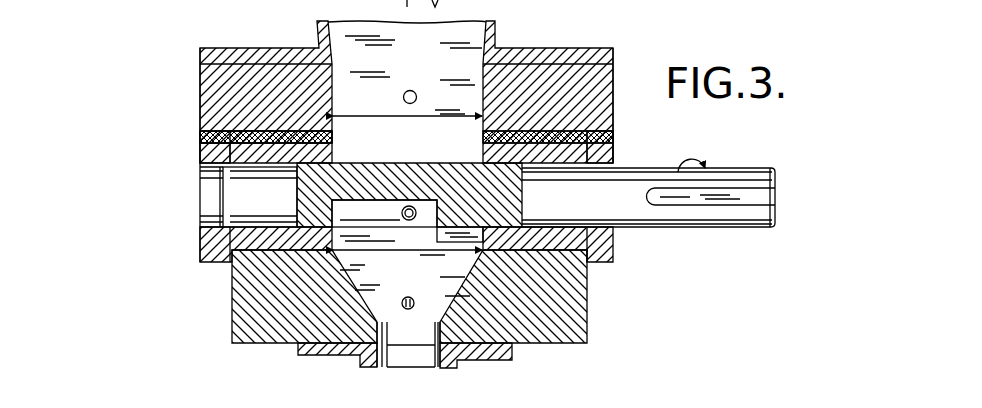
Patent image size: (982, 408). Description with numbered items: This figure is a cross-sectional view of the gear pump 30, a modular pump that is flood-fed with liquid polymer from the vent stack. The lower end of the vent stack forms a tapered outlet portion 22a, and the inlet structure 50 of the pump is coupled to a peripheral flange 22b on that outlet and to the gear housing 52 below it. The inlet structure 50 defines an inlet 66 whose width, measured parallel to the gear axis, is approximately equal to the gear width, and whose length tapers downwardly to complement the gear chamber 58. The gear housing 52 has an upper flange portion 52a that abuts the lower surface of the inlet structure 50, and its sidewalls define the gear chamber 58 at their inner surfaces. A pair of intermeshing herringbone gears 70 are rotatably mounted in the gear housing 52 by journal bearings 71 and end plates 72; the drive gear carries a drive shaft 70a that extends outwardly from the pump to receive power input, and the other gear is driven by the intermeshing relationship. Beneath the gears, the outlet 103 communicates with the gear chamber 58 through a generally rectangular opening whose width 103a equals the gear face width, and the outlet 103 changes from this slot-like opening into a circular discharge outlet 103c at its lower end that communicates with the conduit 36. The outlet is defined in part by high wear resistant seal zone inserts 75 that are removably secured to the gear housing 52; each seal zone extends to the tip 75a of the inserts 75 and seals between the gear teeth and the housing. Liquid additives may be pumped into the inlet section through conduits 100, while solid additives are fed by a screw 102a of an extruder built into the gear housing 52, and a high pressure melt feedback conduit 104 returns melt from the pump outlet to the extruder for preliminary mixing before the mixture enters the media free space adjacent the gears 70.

The gear pump 30 is at (196, 103).
The tapered outlet portion 22a is at (498, 28).
The peripheral flange 22b is at (586, 52).
The inlet structure 50 is at (613, 118).
The gear housing 52 is at (578, 299).
The upper flange portion 52a is at (201, 138).
The journal bearings 71 is at (207, 157).
The end plates 72 is at (207, 244).
The conduit 36 is at (356, 363).
The inlet 66 is at (367, 115).
The conduits 100 is at (416, 97).
The gear chamber 58 is at (435, 137).
The intermeshing herringbone gears 70 is at (360, 157).
The drive shaft 70a is at (742, 172).
The screw 102a is at (409, 206).
The tip 75a is at (384, 213).
The width 103a is at (398, 250).
The seal zone inserts 75 is at (366, 268).
The high pressure melt feedback conduit 104 is at (430, 322).
The outlet 103 is at (423, 339).
The circular discharge outlet 103c is at (411, 357).